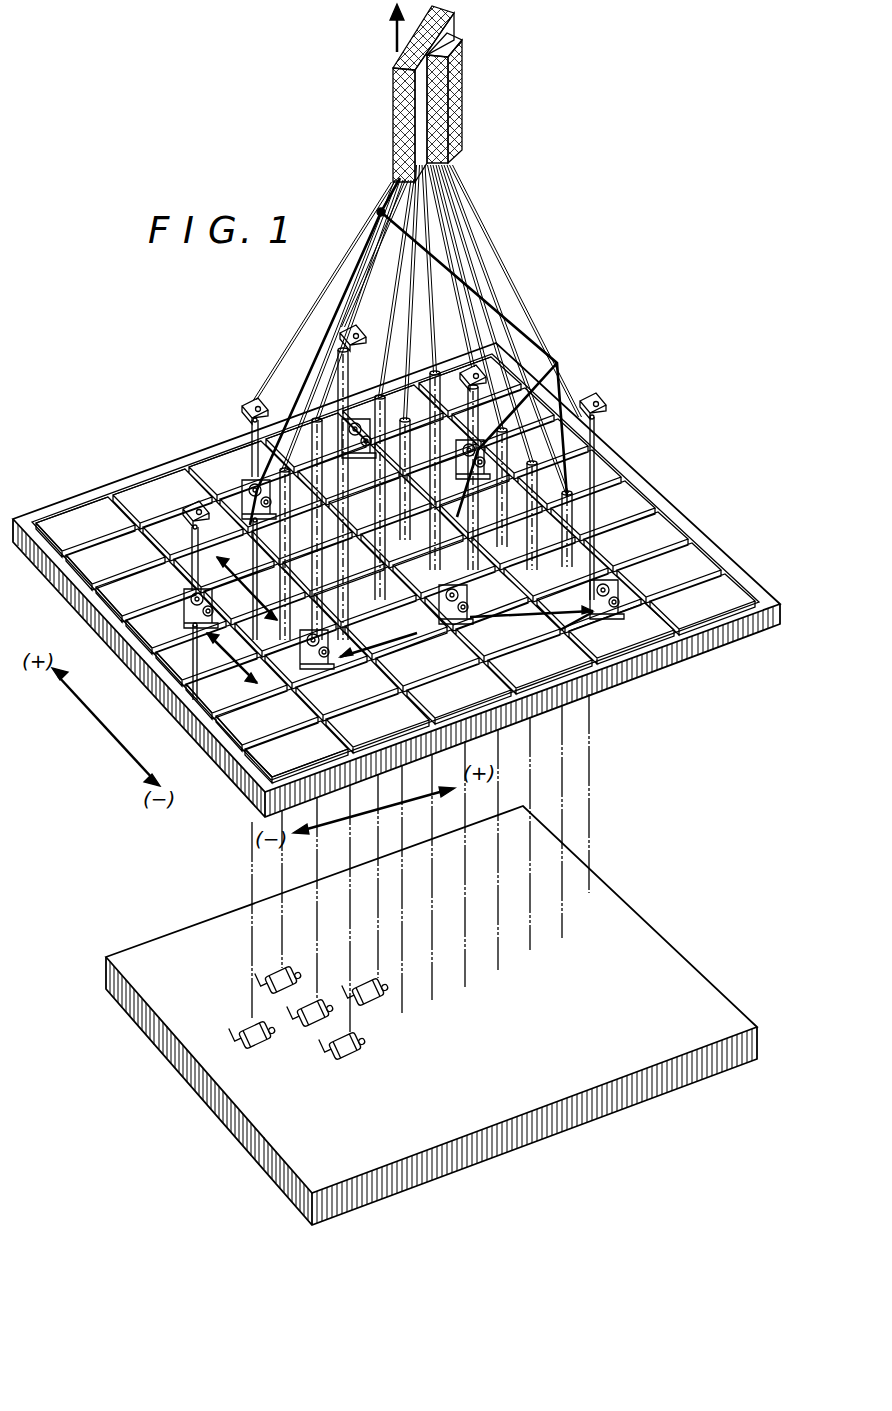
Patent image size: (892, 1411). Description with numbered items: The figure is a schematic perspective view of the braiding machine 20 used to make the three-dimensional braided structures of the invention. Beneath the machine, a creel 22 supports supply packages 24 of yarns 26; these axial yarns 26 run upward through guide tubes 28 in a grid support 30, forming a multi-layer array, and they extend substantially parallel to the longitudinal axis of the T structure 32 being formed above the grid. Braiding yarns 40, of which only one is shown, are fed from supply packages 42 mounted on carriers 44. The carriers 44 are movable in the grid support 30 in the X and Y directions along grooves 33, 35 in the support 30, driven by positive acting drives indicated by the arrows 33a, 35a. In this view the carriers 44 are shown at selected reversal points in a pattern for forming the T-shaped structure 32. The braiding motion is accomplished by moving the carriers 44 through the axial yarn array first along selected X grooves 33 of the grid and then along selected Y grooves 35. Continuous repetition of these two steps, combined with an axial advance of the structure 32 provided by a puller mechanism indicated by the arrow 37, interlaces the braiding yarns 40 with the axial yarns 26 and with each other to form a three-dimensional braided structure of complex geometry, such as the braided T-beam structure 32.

The braiding machine 20 is at (556, 275).
The creel 22 is at (185, 945).
The supply packages 24 is at (333, 1052).
The yarns 26 is at (598, 808).
The guide tubes 28 is at (600, 490).
The grid support 30 is at (670, 613).
The T structure 32 is at (462, 105).
The X grooves 33 is at (133, 523).
The positive acting drive arrow (X direction) 33a is at (560, 636).
The Y grooves 35 is at (167, 503).
The positive acting drive arrow (Y direction) 35a is at (267, 670).
The puller mechanism arrow 37 is at (392, 30).
The braiding yarns 40 is at (548, 358).
The supply packages 42 is at (470, 605).
The carriers 44 is at (438, 620).